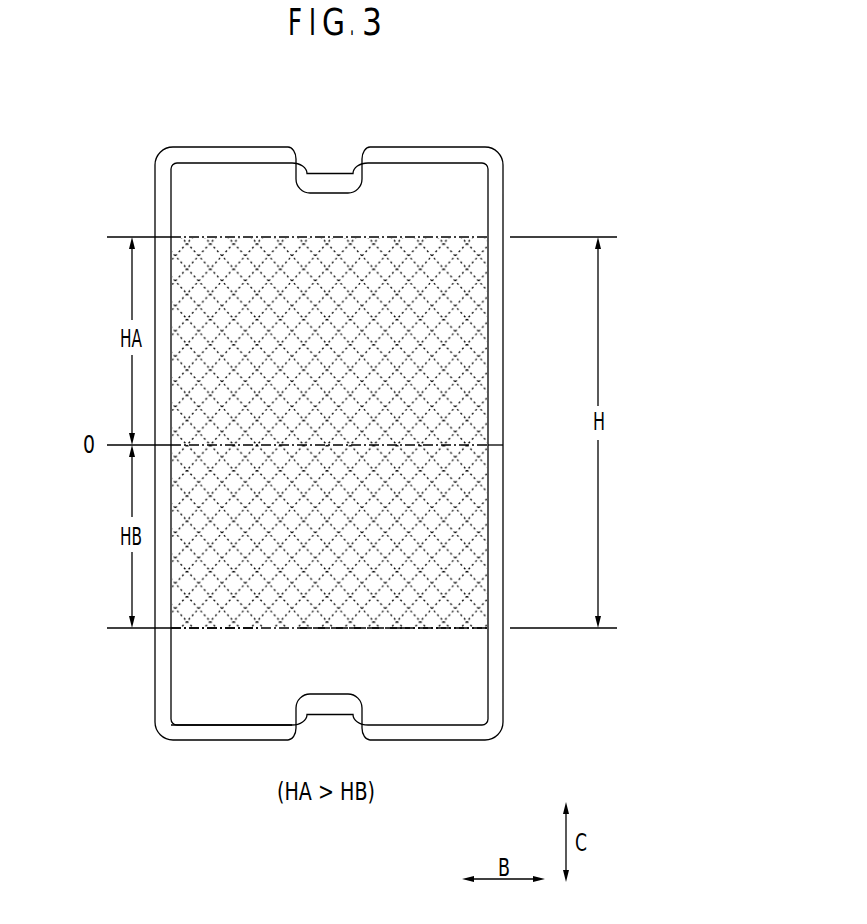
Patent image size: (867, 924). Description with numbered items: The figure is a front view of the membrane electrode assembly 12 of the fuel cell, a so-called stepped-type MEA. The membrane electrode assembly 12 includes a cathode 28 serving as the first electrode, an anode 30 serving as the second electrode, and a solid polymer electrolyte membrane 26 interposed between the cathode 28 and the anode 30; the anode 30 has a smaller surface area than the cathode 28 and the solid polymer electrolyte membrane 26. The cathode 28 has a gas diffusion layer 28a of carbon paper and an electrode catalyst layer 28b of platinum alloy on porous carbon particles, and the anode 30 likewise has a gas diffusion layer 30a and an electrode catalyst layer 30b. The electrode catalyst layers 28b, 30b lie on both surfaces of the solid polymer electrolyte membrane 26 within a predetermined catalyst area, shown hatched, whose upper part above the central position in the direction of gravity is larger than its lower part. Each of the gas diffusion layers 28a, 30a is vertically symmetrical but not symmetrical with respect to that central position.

The membrane electrode assembly 12 is at (464, 64).
The solid polymer electrolyte membrane 26 is at (500, 205).
The cathode 28 is at (505, 173).
The gas diffusion layer 28a is at (163, 661).
The electrode catalyst layer 28b is at (436, 608).
The anode 30 is at (460, 182).
The gas diffusion layer 30a is at (200, 692).
The electrode catalyst layer 30b is at (480, 587).